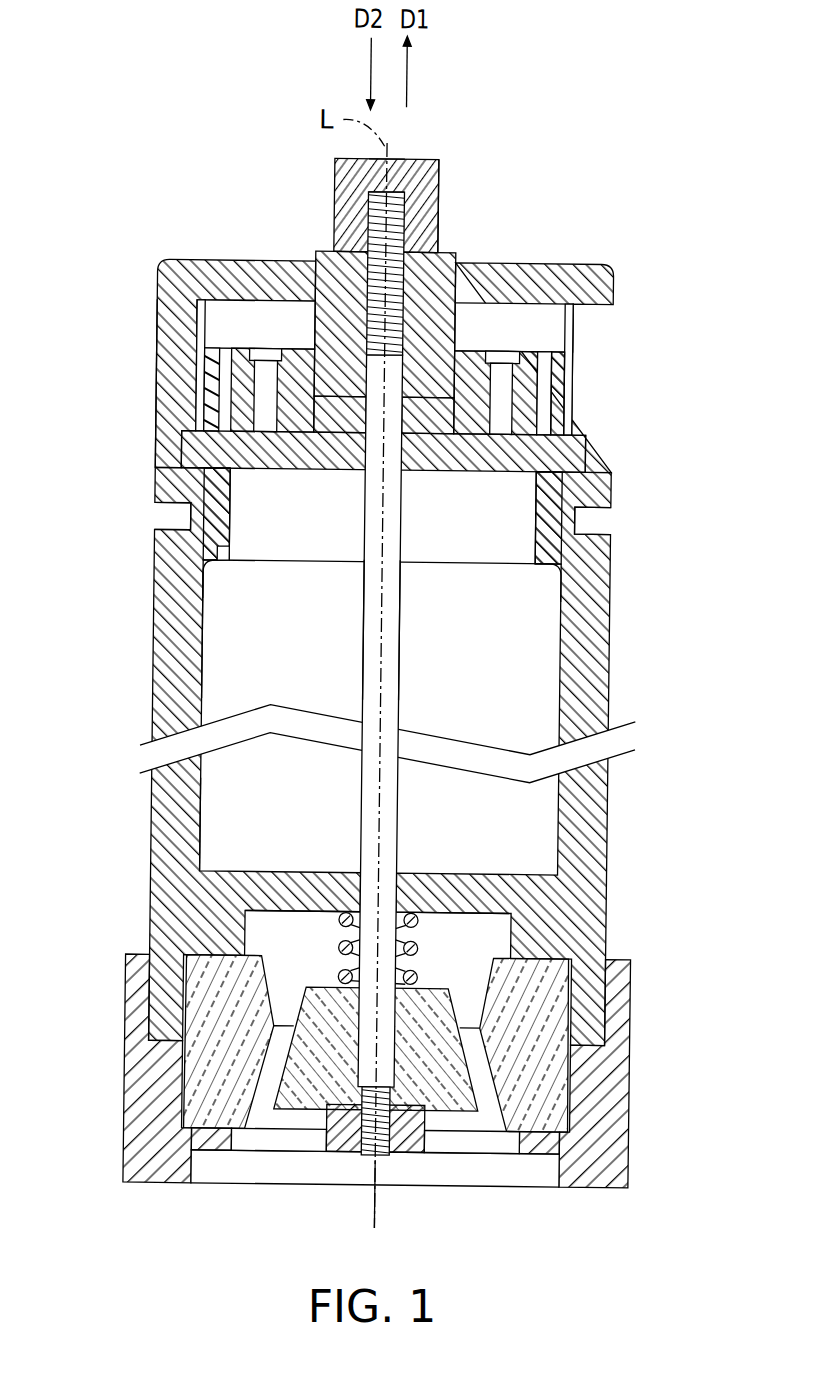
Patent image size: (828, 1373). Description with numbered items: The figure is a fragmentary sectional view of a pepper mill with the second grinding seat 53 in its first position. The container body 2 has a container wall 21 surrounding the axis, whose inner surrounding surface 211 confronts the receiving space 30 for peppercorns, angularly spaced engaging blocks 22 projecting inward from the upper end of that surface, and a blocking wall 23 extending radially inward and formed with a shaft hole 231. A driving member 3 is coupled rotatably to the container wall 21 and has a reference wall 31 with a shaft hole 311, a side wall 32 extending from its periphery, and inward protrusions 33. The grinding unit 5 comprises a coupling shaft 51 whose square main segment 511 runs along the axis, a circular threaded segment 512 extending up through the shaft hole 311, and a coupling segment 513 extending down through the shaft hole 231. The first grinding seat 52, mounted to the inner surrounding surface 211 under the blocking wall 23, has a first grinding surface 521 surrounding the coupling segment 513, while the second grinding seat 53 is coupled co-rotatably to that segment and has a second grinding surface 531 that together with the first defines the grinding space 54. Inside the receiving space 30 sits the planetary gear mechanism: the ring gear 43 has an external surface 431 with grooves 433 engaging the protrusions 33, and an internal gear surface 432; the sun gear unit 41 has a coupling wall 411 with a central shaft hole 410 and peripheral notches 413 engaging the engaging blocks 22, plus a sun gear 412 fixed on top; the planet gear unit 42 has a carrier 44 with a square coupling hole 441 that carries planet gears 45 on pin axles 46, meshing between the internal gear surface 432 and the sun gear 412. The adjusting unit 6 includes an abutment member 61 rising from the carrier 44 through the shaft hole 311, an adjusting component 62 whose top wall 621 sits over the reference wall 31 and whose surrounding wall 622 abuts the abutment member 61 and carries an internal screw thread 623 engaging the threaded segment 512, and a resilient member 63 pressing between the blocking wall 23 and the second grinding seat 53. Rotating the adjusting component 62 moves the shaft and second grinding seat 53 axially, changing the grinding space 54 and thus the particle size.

The container body 2 is at (148, 663).
The container wall 21 is at (172, 713).
The inner surrounding surface 211 is at (210, 810).
The engaging blocks 22 is at (226, 471).
The blocking wall 23 is at (262, 893).
The shaft hole 231 is at (545, 851).
The driving member 3 is at (148, 453).
The receiving space 30 is at (180, 630).
The reference wall 31 is at (222, 280).
The shaft hole 311 is at (459, 261).
The side wall 32 is at (180, 397).
The protrusions 33 is at (204, 340).
The sun gear unit 41 is at (489, 487).
The shaft hole 410 is at (225, 597).
The coupling wall 411 is at (575, 525).
The sun gear 412 is at (566, 452).
The notches 413 is at (165, 521).
The planet gear unit 42 is at (521, 321).
The ring gear 43 is at (559, 358).
The external surface 431 is at (524, 366).
The internal gear surface 432 is at (549, 386).
The grooves 433 is at (563, 401).
The carrier 44 is at (254, 362).
The square coupling hole 441 is at (196, 303).
The planet gears 45 is at (215, 405).
The pin axles 46 is at (215, 563).
The grinding unit 5 is at (583, 967).
The coupling shaft 51 is at (401, 641).
The main segment 511 is at (397, 613).
The threaded segment 512 is at (401, 241).
The coupling segment 513 is at (397, 1047).
The first grinding seat 52 is at (542, 1005).
The first grinding surface 521 is at (285, 1062).
The second grinding seat 53 is at (504, 960).
The second grinding surface 531 is at (345, 1120).
The grinding space 54 is at (484, 1083).
The adjusting unit 6 is at (290, 177).
The abutment member 61 is at (335, 330).
The adjusting component 62 is at (333, 152).
The top wall 621 is at (398, 168).
The surrounding wall 622 is at (418, 201).
The internal screw thread 623 is at (406, 193).
The resilient member 63 is at (421, 946).